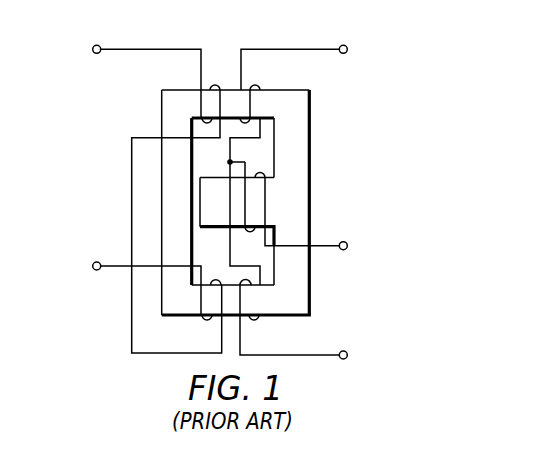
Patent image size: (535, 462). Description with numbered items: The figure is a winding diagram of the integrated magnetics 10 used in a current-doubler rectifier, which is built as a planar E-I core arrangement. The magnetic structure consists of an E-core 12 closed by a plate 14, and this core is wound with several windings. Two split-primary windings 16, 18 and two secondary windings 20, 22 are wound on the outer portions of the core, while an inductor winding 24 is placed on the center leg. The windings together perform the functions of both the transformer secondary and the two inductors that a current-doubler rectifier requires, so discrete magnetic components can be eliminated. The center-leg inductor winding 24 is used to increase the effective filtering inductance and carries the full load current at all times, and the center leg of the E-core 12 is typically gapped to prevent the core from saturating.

The integrated magnetics 10 is at (367, 150).
The E-core 12 is at (302, 280).
The plate 14 is at (167, 110).
The split-primary winding 16 is at (201, 105).
The split-primary winding 18 is at (200, 300).
The secondary winding 20 is at (252, 101).
The secondary winding 22 is at (258, 302).
The inductor winding 24 is at (245, 198).